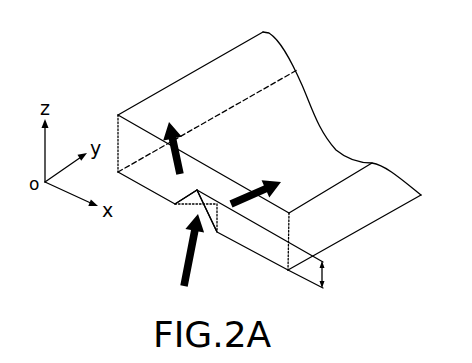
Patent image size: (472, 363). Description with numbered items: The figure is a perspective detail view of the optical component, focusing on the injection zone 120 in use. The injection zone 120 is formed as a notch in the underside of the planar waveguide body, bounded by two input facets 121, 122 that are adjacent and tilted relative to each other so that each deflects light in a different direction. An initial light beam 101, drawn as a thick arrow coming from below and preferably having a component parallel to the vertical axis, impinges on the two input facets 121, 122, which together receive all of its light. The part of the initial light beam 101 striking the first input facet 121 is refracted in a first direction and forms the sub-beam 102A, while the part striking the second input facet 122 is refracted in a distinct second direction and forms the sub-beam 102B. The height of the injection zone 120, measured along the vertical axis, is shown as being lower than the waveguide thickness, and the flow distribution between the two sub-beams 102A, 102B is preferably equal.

The injection zone 120 is at (240, 150).
The first input facet 121 is at (188, 201).
The second input facet 122 is at (218, 207).
The initial light beam 101 is at (180, 270).
The sub-beam 102A is at (161, 128).
The sub-beam 102B is at (284, 182).